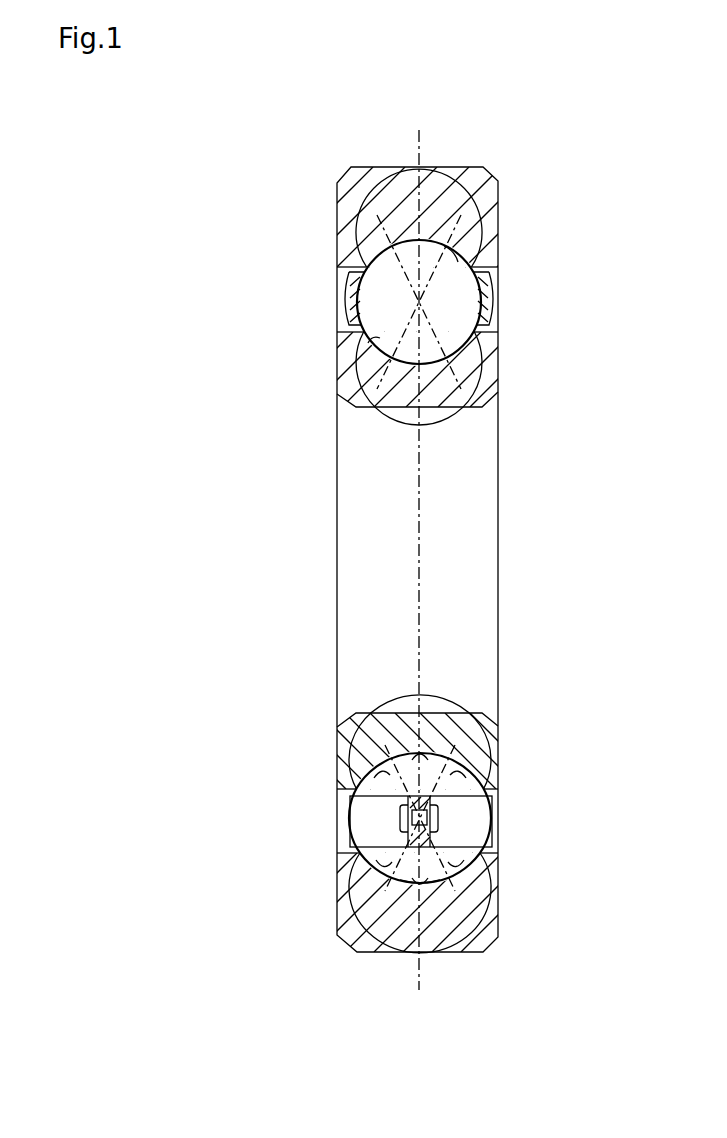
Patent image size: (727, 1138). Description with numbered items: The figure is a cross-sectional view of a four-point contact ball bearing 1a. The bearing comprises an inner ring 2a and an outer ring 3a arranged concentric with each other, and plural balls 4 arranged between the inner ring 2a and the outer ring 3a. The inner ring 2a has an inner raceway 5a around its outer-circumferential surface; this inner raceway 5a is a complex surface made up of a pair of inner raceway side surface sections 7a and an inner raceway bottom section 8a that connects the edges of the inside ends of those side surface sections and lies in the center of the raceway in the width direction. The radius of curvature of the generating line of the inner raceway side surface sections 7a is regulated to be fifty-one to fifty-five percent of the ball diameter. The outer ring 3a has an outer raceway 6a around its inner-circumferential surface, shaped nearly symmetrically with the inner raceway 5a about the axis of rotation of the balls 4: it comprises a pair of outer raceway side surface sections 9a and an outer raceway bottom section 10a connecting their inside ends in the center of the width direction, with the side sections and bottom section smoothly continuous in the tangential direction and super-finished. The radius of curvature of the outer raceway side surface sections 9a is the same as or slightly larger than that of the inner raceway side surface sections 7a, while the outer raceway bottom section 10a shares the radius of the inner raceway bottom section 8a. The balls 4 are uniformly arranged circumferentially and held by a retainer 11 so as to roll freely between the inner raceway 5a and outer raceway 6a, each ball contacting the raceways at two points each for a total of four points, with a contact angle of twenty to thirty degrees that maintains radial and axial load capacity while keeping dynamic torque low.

The four-point contact ball bearing 1a is at (493, 167).
The inner ring 2a is at (500, 382).
The outer ring 3a is at (336, 200).
The balls 4 is at (378, 308).
The inner raceway 5a is at (362, 340).
The outer raceway 6a is at (456, 252).
The inner raceway side surface sections 7a is at (368, 778).
The inner raceway bottom section 8a is at (428, 797).
The outer raceway side surface sections 9a is at (368, 866).
The outer raceway bottom section 10a is at (433, 886).
The retainer 11 is at (486, 300).